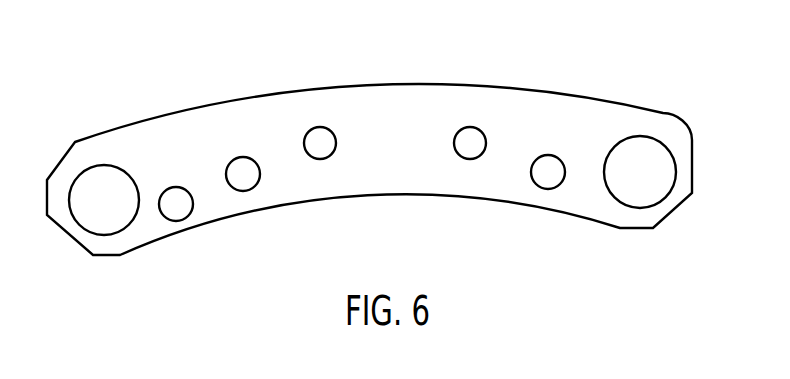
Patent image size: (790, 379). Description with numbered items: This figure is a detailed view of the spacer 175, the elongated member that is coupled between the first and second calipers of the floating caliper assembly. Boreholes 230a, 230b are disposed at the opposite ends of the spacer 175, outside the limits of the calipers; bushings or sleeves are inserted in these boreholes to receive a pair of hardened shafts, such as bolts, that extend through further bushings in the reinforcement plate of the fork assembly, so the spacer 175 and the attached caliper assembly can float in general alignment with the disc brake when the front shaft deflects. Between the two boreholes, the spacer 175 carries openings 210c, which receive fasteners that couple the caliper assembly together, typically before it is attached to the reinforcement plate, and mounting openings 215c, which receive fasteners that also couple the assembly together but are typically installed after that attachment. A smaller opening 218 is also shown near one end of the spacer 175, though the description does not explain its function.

The spacer 175 is at (565, 50).
The borehole 230a is at (105, 187).
The borehole 230b is at (638, 172).
The small aperture 218 is at (176, 207).
The openings 210c is at (243, 174).
The mounting openings 215c is at (320, 147).